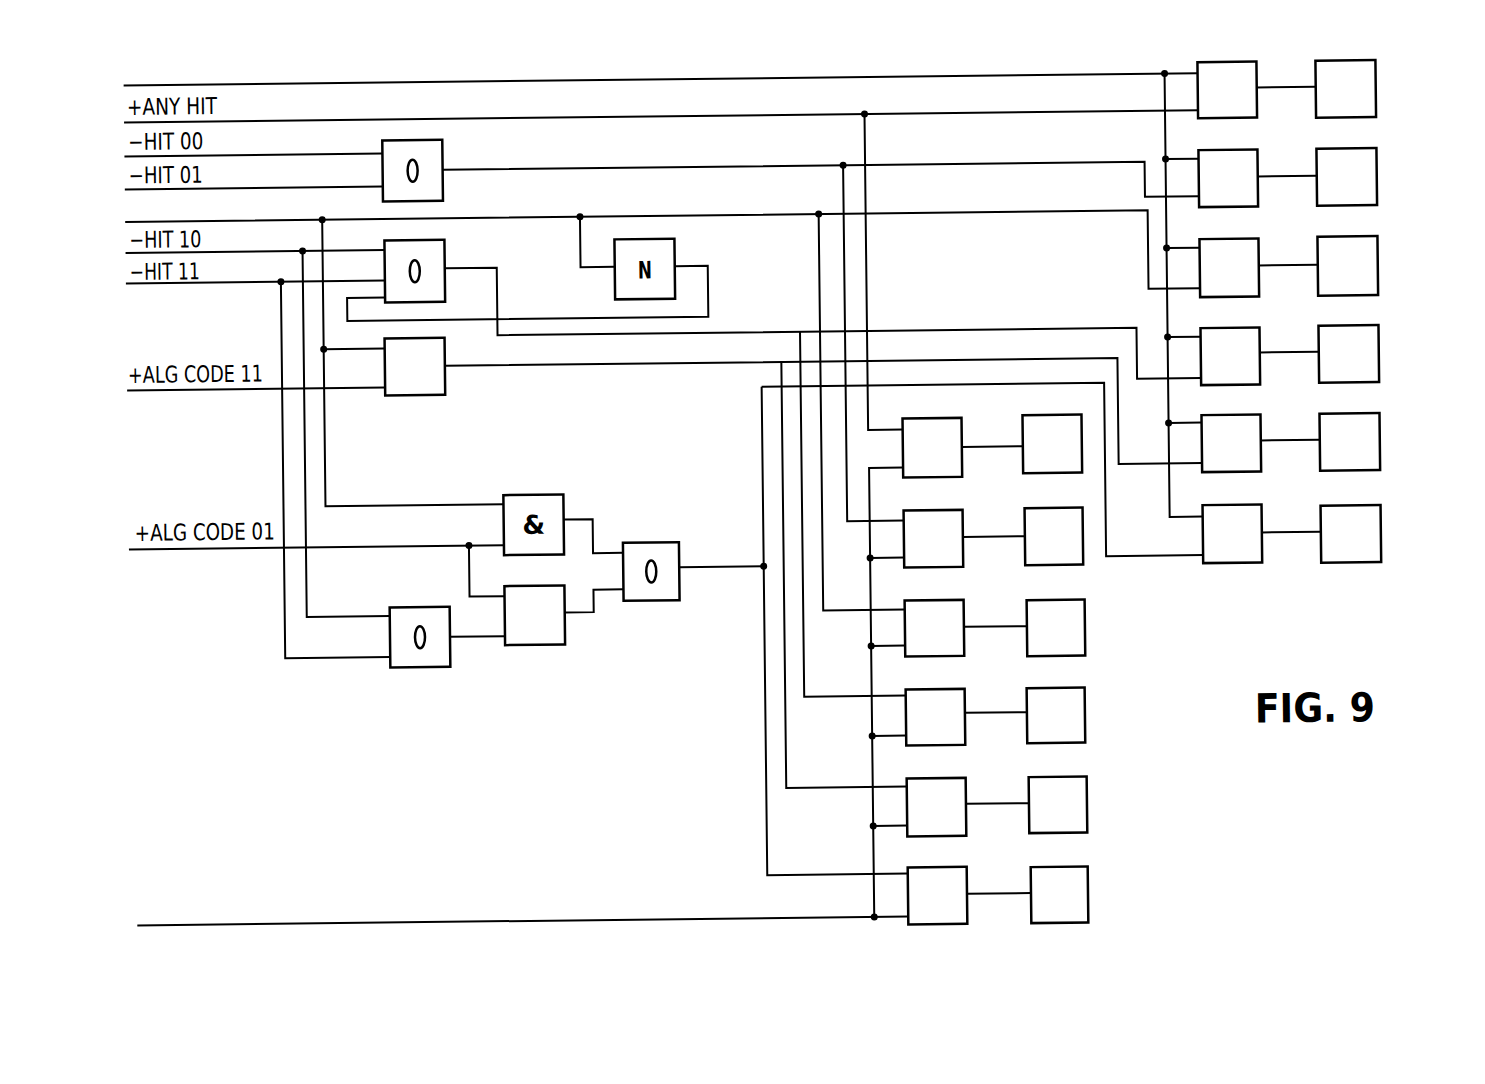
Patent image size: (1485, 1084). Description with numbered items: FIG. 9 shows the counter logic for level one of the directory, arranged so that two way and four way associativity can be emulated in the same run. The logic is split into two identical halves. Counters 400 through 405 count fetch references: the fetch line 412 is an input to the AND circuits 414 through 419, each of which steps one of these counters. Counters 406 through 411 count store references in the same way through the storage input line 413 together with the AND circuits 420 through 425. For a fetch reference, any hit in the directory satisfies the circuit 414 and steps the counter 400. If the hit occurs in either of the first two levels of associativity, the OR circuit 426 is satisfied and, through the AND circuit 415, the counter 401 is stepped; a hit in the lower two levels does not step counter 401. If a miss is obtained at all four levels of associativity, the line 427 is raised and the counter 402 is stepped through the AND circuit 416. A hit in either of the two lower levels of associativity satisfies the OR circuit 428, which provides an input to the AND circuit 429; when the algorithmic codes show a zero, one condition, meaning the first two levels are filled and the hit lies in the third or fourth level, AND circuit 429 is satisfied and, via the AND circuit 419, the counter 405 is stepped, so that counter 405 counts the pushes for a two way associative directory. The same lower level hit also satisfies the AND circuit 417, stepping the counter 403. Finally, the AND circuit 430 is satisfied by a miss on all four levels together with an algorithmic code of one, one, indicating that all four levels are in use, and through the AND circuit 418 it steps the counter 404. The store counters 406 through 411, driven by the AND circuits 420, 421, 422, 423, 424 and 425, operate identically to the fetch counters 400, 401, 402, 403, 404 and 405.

The counter 400 is at (1374, 79).
The counter 401 is at (1372, 154).
The counter 402 is at (1366, 244).
The counter 403 is at (1368, 336).
The counter 404 is at (1370, 423).
The counter 405 is at (1372, 521).
The counter 406 is at (1019, 462).
The counter 407 is at (1020, 519).
The counter 408 is at (1077, 640).
The counter 409 is at (1080, 725).
The counter 410 is at (1079, 815).
The counter 411 is at (1078, 905).
The fetch line 412 is at (228, 78).
The storage input line 413 is at (254, 919).
The AND circuit 414 is at (1252, 79).
The AND circuit 415 is at (1248, 156).
The AND circuit 416 is at (1246, 246).
The AND circuit 417 is at (1246, 336).
The AND circuit 418 is at (1246, 422).
The AND circuit 419 is at (1248, 512).
The AND circuit 420 is at (950, 424).
The AND circuit 421 is at (949, 511).
The AND circuit 422 is at (945, 601).
The AND circuit 423 is at (947, 694).
The AND circuit 424 is at (943, 785).
The AND circuit 425 is at (948, 872).
The OR circuit 426 is at (442, 153).
The line 427 is at (229, 214).
The OR circuit 428 is at (416, 655).
The AND circuit 429 is at (535, 639).
The AND circuit 430 is at (440, 381).